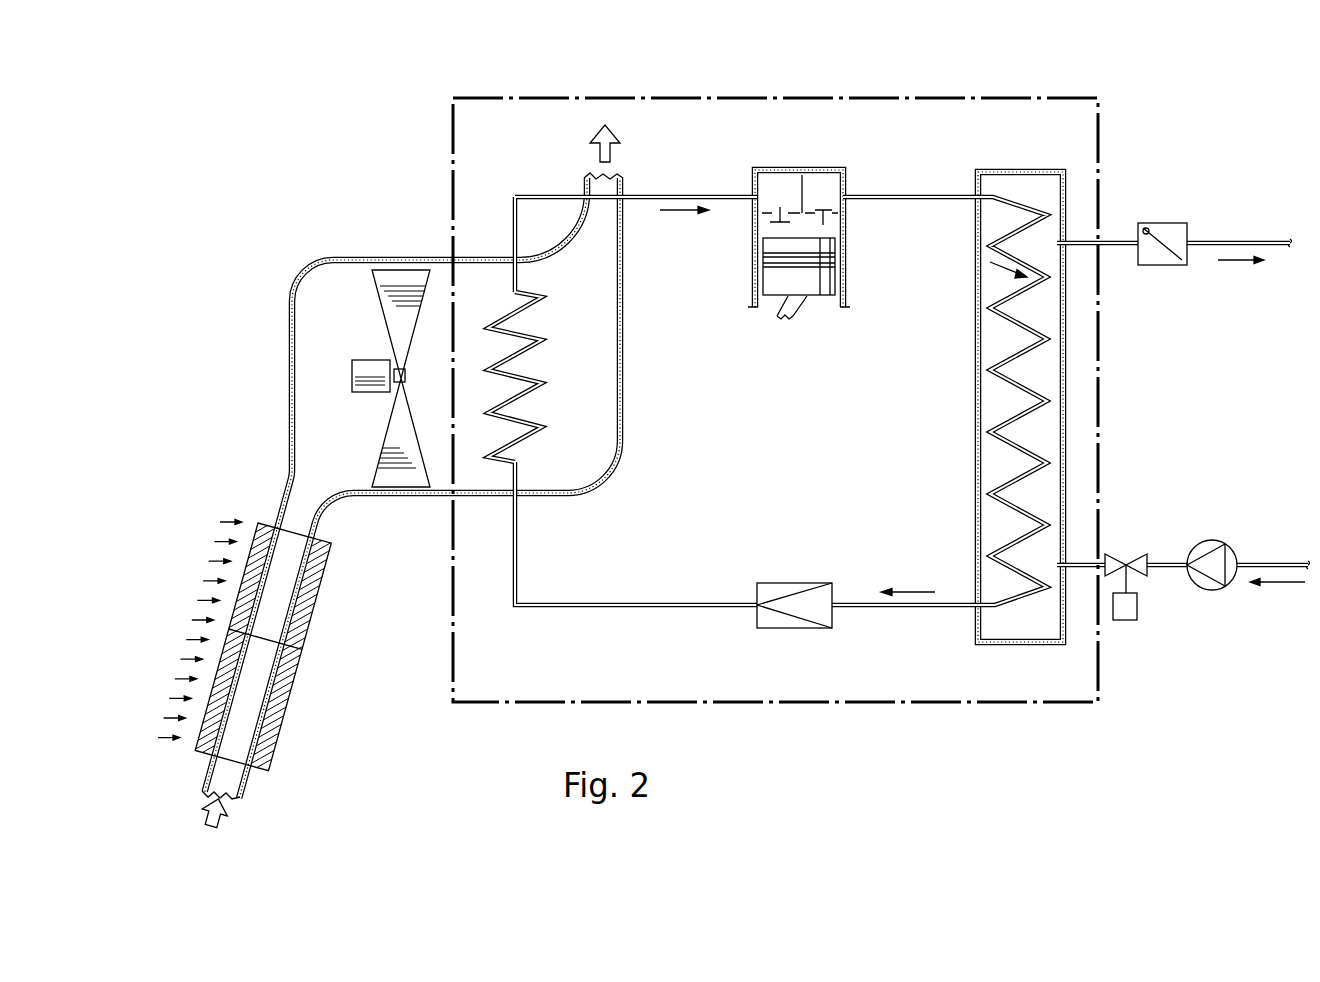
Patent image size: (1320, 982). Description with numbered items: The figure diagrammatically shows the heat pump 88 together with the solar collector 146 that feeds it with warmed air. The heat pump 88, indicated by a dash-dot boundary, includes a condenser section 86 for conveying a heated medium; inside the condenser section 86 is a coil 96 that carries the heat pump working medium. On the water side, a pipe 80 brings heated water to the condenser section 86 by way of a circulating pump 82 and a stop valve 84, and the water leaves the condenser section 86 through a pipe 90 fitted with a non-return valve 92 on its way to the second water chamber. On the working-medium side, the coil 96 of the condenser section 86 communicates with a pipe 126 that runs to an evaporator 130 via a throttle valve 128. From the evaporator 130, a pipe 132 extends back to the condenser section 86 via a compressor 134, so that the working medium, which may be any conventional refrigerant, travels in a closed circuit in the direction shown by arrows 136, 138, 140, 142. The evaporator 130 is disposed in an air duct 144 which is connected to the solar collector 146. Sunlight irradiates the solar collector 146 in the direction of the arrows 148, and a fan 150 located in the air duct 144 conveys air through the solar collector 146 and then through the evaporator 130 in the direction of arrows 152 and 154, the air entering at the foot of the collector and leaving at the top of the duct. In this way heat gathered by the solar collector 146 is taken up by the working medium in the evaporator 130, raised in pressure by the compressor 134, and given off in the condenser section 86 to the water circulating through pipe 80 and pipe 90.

The pipe 80 is at (1165, 563).
The circulating pump 82 is at (1228, 545).
The stop valve 84 is at (1140, 577).
The condenser section 86 is at (958, 436).
The heat pump 88 is at (885, 707).
The pipe 90 is at (1117, 240).
The non-return valve 92 is at (1170, 229).
The coil 96 is at (1000, 383).
The pipe 126 is at (880, 608).
The throttle valve 128 is at (788, 620).
The evaporator 130 is at (565, 368).
The pipe 132 is at (722, 196).
The compressor 134 is at (838, 170).
The arrow 136 is at (920, 590).
The arrow 138 is at (510, 455).
The arrow 140 is at (678, 214).
The arrow 142 is at (990, 262).
The air duct 144 is at (298, 283).
The solar collector 146 is at (300, 646).
The arrows 148 is at (174, 644).
The fan 150 is at (392, 331).
The arrow 152 is at (228, 816).
The arrow 154 is at (592, 150).